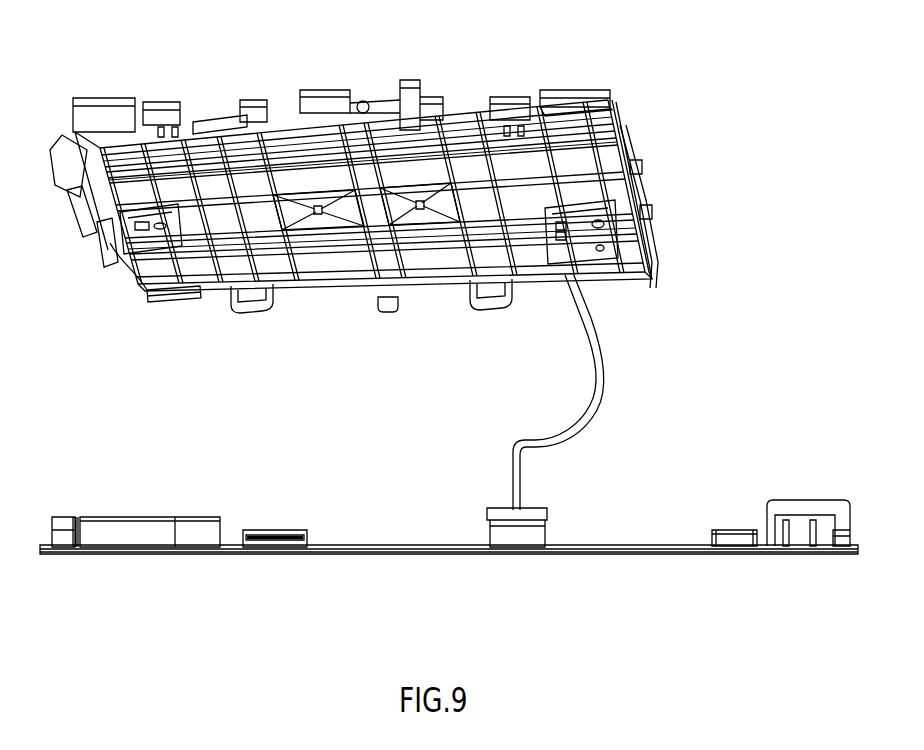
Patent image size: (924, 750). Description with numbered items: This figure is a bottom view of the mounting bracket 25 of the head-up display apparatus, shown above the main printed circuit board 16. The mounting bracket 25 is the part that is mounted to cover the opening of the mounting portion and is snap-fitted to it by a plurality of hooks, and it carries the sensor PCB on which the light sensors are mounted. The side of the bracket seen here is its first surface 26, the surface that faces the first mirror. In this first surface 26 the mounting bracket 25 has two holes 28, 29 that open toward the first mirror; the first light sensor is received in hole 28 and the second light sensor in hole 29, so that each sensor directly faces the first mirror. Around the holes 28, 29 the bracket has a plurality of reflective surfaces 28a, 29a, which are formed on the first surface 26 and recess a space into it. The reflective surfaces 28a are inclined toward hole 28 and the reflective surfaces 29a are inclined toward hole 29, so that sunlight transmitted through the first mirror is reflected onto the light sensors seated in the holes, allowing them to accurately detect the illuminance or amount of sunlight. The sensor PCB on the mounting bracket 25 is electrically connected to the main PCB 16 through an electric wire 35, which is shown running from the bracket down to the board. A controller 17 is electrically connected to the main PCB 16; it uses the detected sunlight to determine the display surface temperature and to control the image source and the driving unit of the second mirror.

The mounting bracket 25 is at (82, 76).
The first surface 26 is at (266, 258).
The hole 28 is at (312, 205).
The reflective surfaces 28a is at (326, 200).
The hole 29 is at (445, 205).
The reflective surfaces 29a is at (390, 190).
The electric wire 35 is at (596, 397).
The main printed circuit board 16 is at (342, 552).
The controller 17 is at (130, 527).